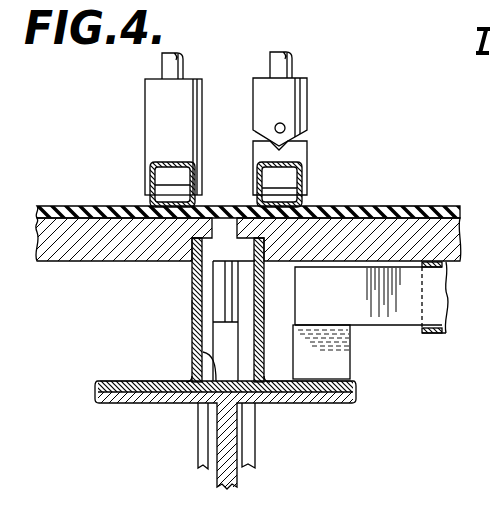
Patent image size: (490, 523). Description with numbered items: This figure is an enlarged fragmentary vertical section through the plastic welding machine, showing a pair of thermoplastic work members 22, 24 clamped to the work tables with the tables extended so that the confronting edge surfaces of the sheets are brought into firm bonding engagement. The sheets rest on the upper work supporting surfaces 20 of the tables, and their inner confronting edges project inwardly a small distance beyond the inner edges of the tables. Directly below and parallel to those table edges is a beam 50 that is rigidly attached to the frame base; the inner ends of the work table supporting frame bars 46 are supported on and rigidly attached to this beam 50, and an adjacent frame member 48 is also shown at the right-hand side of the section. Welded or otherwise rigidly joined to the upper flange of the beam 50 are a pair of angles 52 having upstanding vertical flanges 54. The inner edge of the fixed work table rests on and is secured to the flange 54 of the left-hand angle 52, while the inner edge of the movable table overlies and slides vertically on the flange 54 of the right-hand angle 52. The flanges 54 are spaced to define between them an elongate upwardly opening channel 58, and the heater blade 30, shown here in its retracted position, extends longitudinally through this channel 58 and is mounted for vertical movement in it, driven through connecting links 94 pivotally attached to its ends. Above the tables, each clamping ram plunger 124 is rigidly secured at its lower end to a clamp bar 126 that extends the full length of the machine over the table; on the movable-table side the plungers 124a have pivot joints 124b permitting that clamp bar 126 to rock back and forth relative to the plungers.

The upper work supporting surfaces 20 is at (92, 218).
The thermoplastic work member 22 is at (62, 212).
The thermoplastic work member 24 is at (388, 206).
The heater blade 30 is at (225, 300).
The work table supporting frame bars 46 is at (390, 298).
The housing member 48 is at (450, 283).
The beam 50 is at (230, 440).
The angles 52 is at (191, 314).
The vertical flanges 54 is at (192, 285).
The channel 58 is at (197, 408).
The connecting links 94 is at (198, 446).
The plunger 124 is at (166, 67).
The plungers 124a is at (283, 67).
The pivot joints 124b is at (292, 107).
The clamp bar 126 is at (151, 167).